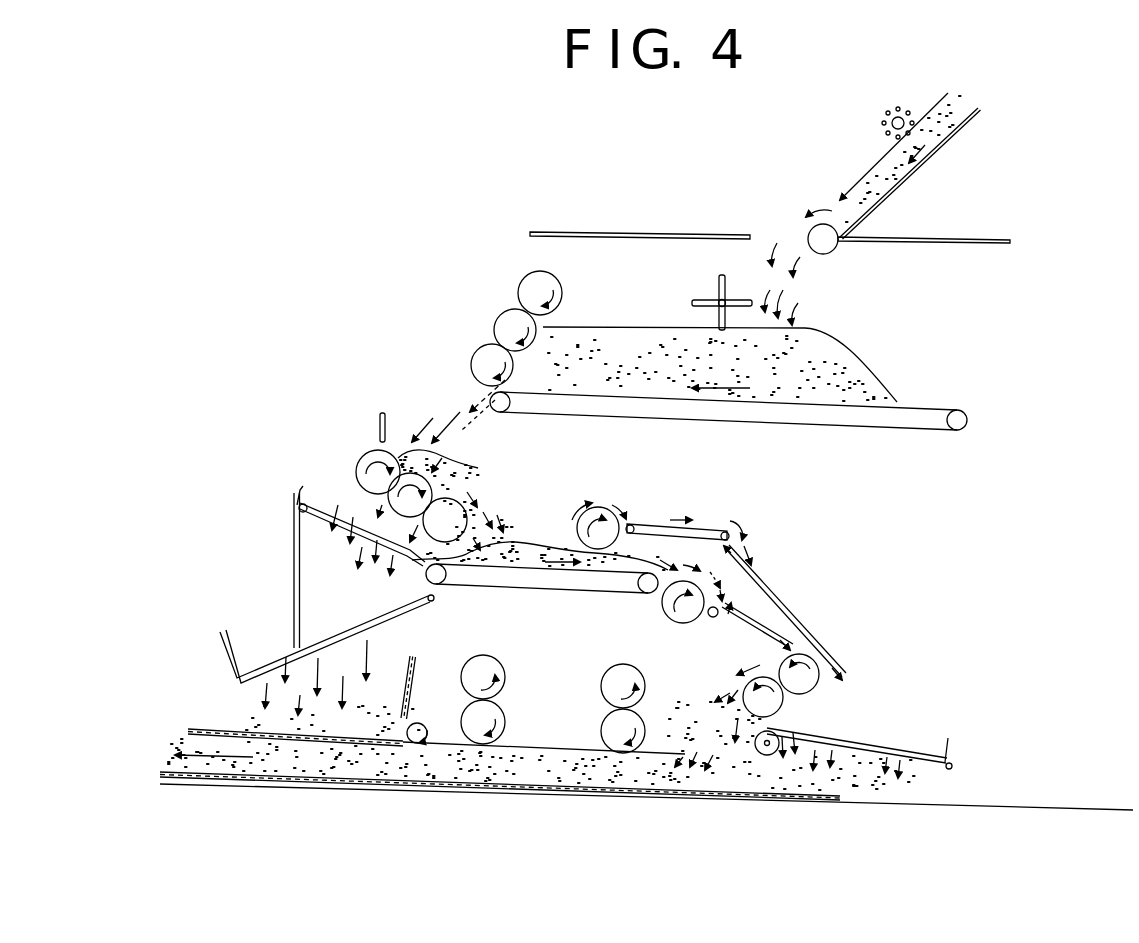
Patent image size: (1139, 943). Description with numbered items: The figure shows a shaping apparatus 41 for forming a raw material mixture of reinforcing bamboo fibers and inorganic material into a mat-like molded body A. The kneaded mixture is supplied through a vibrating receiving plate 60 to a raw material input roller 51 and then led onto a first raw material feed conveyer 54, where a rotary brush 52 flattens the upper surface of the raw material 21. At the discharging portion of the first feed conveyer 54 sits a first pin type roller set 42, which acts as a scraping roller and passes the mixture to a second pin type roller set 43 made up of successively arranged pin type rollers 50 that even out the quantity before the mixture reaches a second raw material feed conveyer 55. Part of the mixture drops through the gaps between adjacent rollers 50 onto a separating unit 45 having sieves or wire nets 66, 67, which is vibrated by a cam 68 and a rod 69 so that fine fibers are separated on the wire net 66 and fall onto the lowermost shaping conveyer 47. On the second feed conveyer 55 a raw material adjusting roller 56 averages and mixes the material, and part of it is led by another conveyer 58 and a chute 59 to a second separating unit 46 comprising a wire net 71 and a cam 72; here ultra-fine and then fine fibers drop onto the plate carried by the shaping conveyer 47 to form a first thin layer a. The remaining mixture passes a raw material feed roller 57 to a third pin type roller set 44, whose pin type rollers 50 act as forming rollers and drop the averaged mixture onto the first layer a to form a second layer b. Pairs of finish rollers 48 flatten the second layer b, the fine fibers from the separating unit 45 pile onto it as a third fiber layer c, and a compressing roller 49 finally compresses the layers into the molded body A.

The shaping apparatus 41 is at (441, 138).
The first pin type roller set 42 is at (498, 282).
The second pin type roller set 43 is at (343, 452).
The third pin type roller set 44 is at (838, 694).
The separating unit 45 is at (265, 518).
The second separating unit 46 is at (958, 750).
The shaping conveyer 47 is at (1052, 802).
The finish rollers 48 is at (490, 658).
The compressing roller 49 is at (424, 724).
The pin type rollers 50 is at (496, 332).
The raw material input roller 51 is at (806, 228).
The rotary brush 52 is at (708, 285).
The material 21 is at (722, 276).
The first raw material feed conveyer 54 is at (912, 408).
The second raw material feed conveyer 55 is at (612, 594).
The raw material adjusting roller 56 is at (605, 505).
The raw material feed roller 57 is at (686, 623).
The conveyer 58 is at (698, 520).
The chute 59 is at (780, 600).
The vibrating receiving plate 60 is at (893, 192).
The sieve or wire net 66 is at (326, 502).
The sieve or wire net 67 is at (327, 632).
The cam 68 is at (297, 532).
The rod 69 is at (292, 610).
The wire net 71 is at (907, 737).
The cam 72 is at (769, 757).
The first thin layer a is at (800, 793).
The second layer b is at (555, 765).
The third fiber layer c is at (212, 729).
The molded body A is at (345, 763).